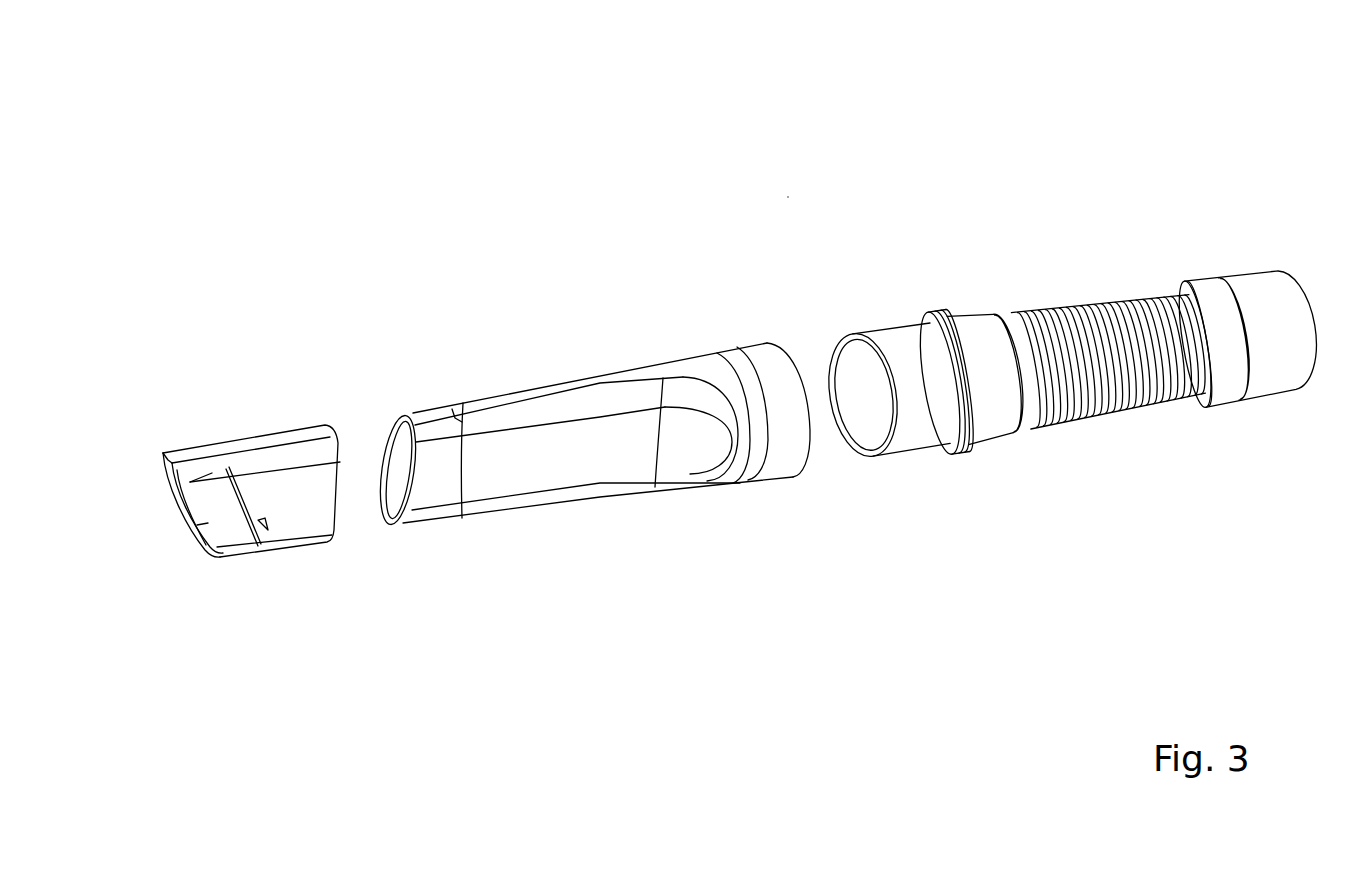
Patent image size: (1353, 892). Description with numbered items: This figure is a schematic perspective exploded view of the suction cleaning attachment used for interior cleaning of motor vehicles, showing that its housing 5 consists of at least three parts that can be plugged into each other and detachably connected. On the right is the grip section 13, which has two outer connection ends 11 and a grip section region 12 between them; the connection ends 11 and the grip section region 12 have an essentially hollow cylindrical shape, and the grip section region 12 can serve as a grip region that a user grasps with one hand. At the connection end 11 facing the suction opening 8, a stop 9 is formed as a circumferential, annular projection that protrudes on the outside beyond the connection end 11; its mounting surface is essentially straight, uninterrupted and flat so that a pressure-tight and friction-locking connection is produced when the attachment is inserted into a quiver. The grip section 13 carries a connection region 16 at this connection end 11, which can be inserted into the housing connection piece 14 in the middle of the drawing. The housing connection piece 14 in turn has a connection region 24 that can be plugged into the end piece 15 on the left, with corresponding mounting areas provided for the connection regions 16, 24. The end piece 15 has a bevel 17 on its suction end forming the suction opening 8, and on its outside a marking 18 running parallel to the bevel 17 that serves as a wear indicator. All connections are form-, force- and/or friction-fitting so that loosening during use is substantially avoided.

The housing 5 is at (788, 197).
The suction opening 8 is at (188, 508).
The stop 9 is at (907, 313).
The connection end 11 is at (970, 328).
The grip section region 12 is at (1155, 400).
The grip section 13 is at (1068, 268).
The housing connection piece 14 is at (590, 355).
The end piece 15 is at (283, 395).
The connection region of grip section 16 is at (913, 435).
The bevel 17 is at (193, 477).
The marking 18 is at (247, 490).
The connection region of housing connection piece 24 is at (425, 433).